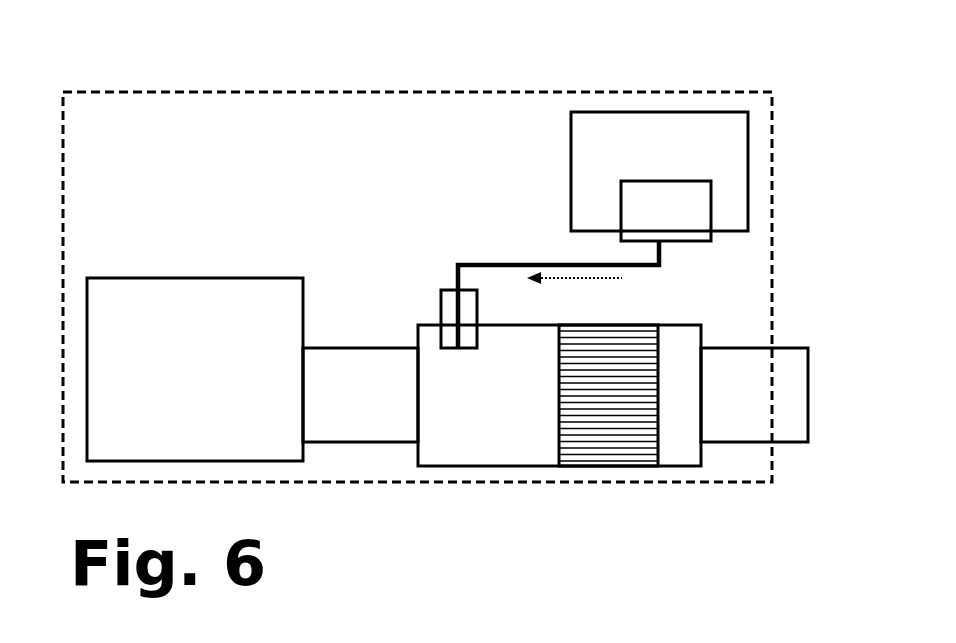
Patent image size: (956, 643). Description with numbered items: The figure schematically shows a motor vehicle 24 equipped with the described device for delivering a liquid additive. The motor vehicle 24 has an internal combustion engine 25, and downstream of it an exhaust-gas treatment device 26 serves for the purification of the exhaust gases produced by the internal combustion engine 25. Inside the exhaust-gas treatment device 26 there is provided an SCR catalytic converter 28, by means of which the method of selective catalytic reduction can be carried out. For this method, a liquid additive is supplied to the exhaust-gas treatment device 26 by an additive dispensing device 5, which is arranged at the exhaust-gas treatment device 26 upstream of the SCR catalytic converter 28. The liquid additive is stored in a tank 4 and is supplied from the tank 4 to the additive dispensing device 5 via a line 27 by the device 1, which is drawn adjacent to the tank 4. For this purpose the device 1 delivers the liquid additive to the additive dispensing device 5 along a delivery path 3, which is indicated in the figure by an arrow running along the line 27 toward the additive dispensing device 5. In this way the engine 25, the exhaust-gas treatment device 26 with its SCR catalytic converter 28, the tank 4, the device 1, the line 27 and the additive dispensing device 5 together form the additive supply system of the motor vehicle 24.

The motor vehicle 24 is at (781, 76).
The internal combustion engine 25 is at (205, 278).
The exhaust-gas treatment device 26 is at (417, 325).
The line 27 is at (482, 263).
The additive dispensing device 5 is at (441, 290).
The device 1 is at (621, 203).
The tank 4 is at (571, 133).
The delivery path 3 is at (607, 278).
The SCR catalytic converter 28 is at (559, 442).